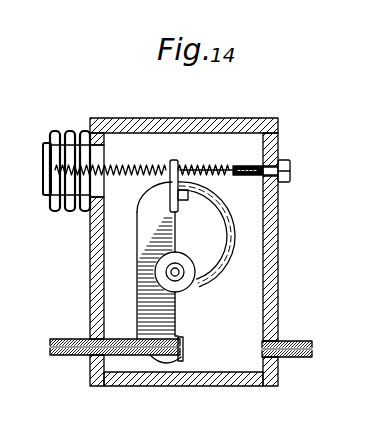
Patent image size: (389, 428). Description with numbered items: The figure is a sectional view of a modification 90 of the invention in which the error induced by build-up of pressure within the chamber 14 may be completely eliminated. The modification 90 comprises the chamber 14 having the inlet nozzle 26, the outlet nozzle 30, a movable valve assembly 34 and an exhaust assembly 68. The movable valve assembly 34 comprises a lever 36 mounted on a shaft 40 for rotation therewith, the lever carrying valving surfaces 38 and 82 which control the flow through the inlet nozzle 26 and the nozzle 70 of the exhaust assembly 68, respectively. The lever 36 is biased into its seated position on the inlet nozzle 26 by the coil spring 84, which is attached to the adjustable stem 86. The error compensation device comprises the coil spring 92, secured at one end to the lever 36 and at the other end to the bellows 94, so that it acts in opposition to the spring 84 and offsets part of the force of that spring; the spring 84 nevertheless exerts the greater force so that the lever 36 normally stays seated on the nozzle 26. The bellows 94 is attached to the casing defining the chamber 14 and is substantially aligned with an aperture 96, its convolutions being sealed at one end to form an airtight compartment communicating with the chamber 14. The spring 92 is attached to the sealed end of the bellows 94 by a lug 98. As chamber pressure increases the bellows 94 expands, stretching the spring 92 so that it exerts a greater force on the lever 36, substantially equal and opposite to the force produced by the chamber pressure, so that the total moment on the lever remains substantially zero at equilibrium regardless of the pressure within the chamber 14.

The chamber 14 is at (105, 246).
The inlet nozzle 26 is at (125, 356).
The outlet nozzle 30 is at (302, 341).
The movable valve assembly 34 is at (137, 272).
The lever 36 is at (141, 212).
The valving surface 38 is at (190, 356).
The shaft 40 is at (178, 278).
The exhaust assembly 68 is at (217, 277).
The nozzle 70 is at (190, 201).
The valving surface 82 is at (199, 184).
The coil spring 84 is at (186, 167).
The adjustable stem 86 is at (291, 175).
The modification 90 is at (106, 106).
The coil spring 92 is at (135, 166).
The bellows 94 is at (50, 152).
The aperture 96 is at (90, 134).
The lug 98 is at (44, 171).